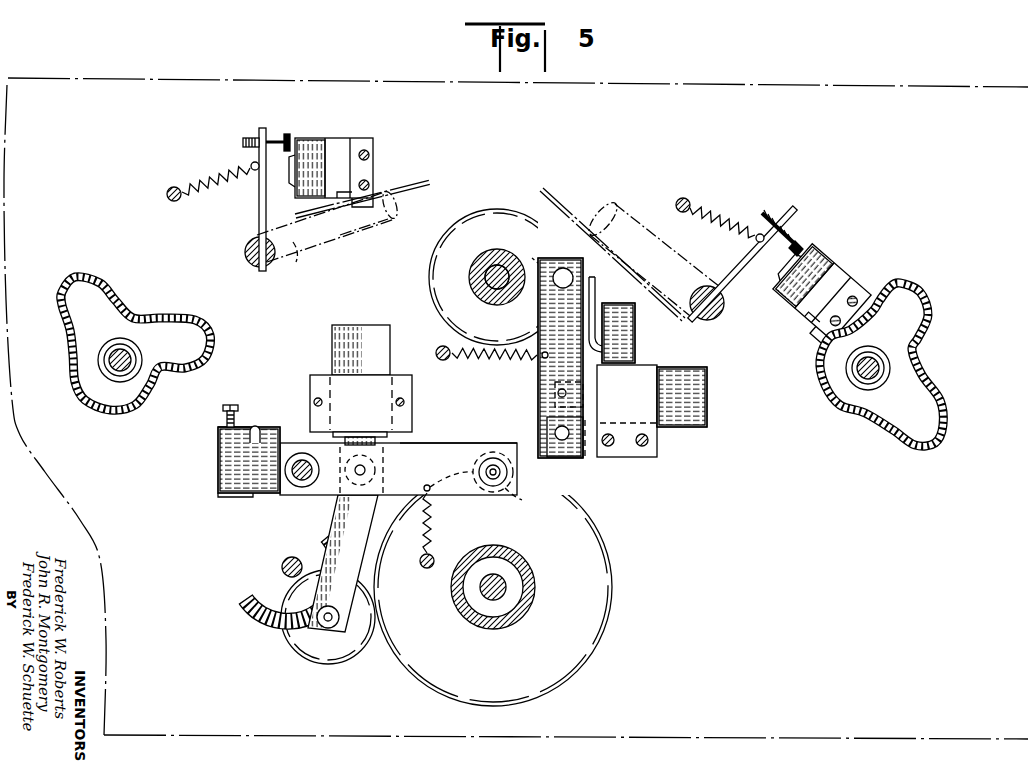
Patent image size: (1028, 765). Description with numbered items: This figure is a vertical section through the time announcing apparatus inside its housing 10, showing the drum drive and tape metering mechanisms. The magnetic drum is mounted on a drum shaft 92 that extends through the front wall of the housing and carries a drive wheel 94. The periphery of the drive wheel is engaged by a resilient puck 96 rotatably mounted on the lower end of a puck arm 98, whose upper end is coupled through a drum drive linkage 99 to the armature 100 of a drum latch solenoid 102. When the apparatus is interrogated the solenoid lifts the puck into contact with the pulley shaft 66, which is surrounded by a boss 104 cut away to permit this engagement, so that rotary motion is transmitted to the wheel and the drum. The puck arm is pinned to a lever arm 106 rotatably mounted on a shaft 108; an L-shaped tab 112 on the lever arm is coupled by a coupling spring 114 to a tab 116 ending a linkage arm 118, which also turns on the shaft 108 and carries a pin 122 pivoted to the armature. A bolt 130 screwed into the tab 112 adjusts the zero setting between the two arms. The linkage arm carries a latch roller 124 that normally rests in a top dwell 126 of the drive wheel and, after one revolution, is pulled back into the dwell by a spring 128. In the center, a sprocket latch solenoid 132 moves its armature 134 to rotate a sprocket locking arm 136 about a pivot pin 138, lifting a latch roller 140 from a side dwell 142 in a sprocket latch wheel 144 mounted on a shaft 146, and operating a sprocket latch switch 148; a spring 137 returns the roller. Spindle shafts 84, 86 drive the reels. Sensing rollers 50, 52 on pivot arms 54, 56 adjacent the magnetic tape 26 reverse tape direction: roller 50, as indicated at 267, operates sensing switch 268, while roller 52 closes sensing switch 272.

The housing 10 is at (868, 87).
The magnetic tape 26 is at (410, 182).
The sensing roller 50 is at (388, 232).
The sensing roller 52 is at (618, 207).
The pivot arm 54 is at (302, 253).
The pivot arm 56 is at (660, 240).
The pulley shaft 66 is at (282, 568).
The spindle shaft 84 is at (117, 358).
The spindle shaft 86 is at (882, 370).
The drum shaft 92 is at (508, 587).
The drive wheel 94 is at (590, 531).
The resilient puck 96 is at (308, 648).
The puck arm 98 is at (372, 522).
The drum drive linkage 99 is at (422, 440).
The armature 100 is at (359, 432).
The drum latch solenoid 102 is at (345, 347).
The boss 104 is at (247, 553).
The lever arm 106 is at (215, 459).
The shaft 108 is at (298, 453).
The L-shaped tab 112 is at (219, 432).
The coupling spring 114 is at (258, 427).
The tab 116 is at (222, 495).
The linkage arm 118 is at (479, 499).
The pin 122 is at (366, 471).
The latch roller 124 is at (500, 464).
The top dwell 126 is at (508, 492).
The spring 128 is at (434, 528).
The bolt 130 is at (222, 407).
The sprocket latch solenoid 132 is at (697, 395).
The armature 134 is at (590, 398).
The sprocket locking arm 136 is at (540, 370).
The spring 137 is at (488, 362).
The pivot pin 138 is at (566, 441).
The latch roller 140 is at (566, 266).
The side dwell 142 is at (532, 258).
The sprocket latch wheel 144 is at (487, 220).
The shaft 146 is at (488, 279).
The sprocket latch switch 148 is at (682, 335).
The sensing roller operating connection 267 is at (247, 228).
The sensing switch 268 is at (319, 133).
The sensing switch 272 is at (870, 223).